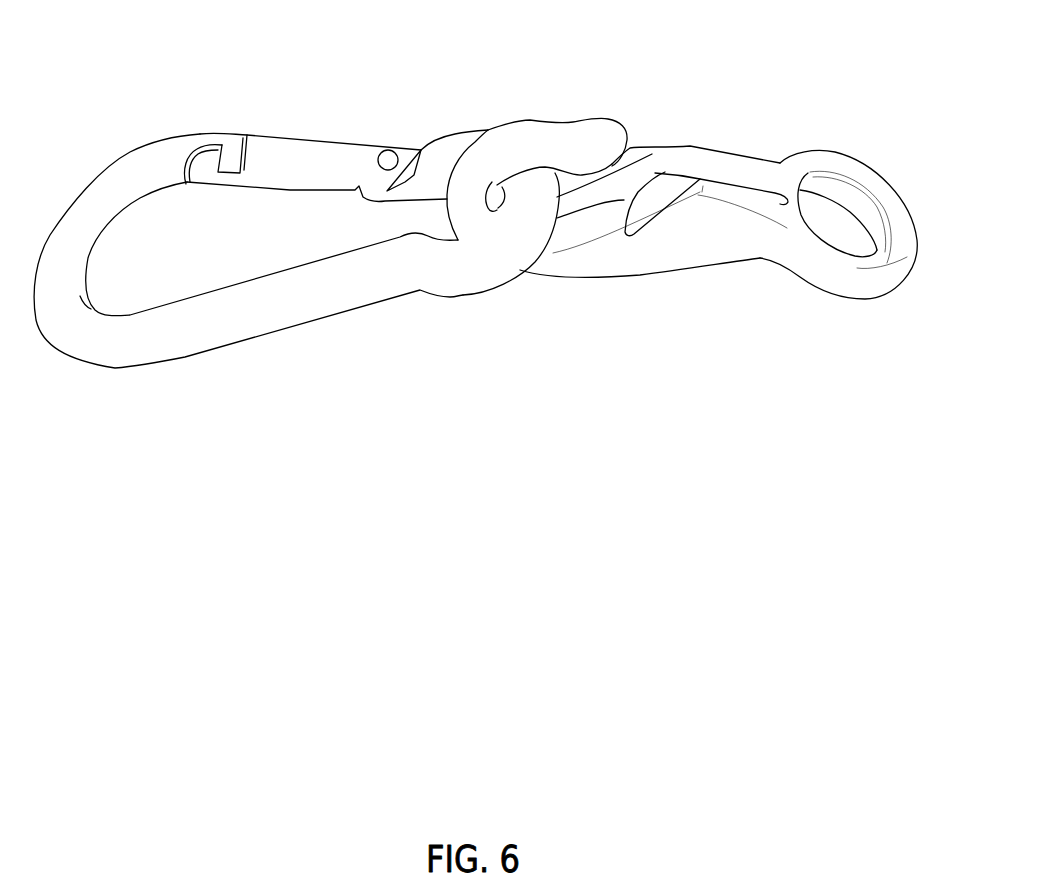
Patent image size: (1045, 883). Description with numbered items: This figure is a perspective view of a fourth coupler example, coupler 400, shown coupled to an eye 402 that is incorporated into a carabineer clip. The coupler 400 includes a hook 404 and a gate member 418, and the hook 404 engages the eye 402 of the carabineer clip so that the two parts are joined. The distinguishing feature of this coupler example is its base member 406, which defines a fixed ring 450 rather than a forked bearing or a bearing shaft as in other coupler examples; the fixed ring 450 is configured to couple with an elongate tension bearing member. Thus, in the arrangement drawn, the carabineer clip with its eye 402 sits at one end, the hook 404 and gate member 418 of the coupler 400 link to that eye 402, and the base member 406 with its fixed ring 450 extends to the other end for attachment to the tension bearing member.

The coupler 400 is at (565, 79).
The eye 402 is at (463, 280).
The hook 404 is at (492, 143).
The base member 406 is at (833, 152).
The gate member 418 is at (655, 150).
The fixed ring 450 is at (873, 187).